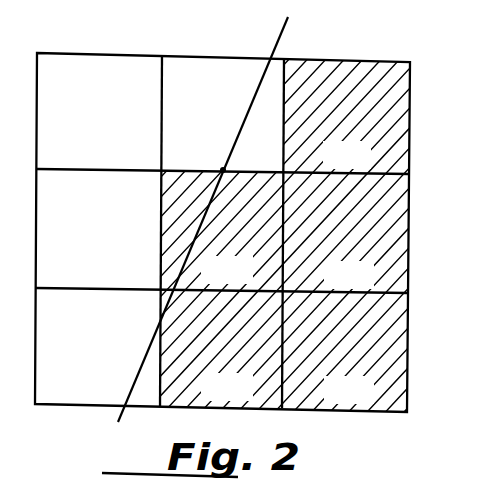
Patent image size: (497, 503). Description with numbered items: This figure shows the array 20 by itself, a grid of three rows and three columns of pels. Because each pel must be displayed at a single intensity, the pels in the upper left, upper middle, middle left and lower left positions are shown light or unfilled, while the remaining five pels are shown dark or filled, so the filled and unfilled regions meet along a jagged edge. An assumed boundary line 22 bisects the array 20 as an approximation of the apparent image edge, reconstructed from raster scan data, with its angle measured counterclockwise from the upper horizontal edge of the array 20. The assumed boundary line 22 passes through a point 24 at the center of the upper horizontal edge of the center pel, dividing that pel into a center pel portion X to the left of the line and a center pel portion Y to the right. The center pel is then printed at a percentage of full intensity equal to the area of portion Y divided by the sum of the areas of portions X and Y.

The array 20 is at (130, 47).
The assumed boundary line 22 is at (283, 37).
The point 24 is at (223, 170).
The center pel portion X is at (182, 210).
The center pel portion Y is at (260, 213).